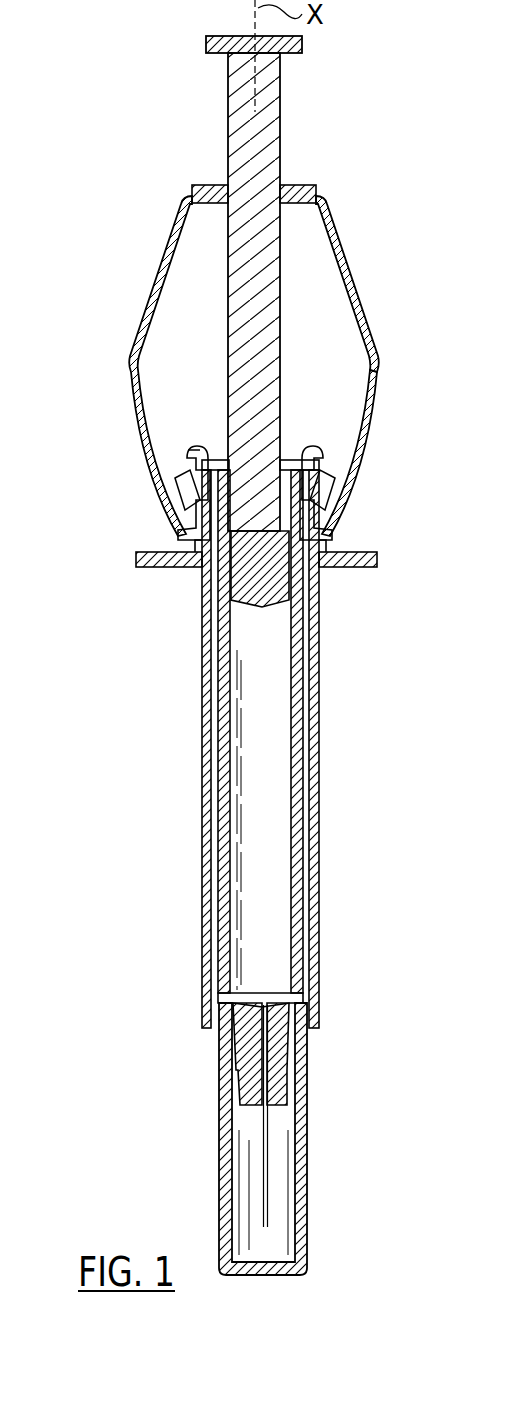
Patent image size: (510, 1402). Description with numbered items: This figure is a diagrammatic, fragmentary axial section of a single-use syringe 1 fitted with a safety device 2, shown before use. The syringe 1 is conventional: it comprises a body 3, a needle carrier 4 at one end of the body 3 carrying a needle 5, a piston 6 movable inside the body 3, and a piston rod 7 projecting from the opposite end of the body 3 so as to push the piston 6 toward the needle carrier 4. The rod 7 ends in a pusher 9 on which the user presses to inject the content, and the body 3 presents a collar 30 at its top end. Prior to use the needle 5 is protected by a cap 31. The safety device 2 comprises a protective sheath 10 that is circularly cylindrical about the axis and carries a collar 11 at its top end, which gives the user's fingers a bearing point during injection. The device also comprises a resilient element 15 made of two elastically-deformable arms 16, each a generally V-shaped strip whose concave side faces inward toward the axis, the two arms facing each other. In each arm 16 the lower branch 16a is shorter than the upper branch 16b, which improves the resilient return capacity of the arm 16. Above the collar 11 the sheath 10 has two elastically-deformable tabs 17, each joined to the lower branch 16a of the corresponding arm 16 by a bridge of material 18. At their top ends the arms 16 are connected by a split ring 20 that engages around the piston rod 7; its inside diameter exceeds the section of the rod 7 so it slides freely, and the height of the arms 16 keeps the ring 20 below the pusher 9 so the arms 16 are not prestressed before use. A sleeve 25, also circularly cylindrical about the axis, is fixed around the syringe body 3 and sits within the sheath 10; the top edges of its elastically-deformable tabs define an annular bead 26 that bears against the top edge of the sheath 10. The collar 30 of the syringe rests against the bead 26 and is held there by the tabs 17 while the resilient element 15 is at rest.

The single-use syringe 1 is at (304, 122).
The safety device 2 is at (332, 762).
The body 3 is at (230, 765).
The needle carrier 4 is at (285, 1040).
The needle 5 is at (268, 1172).
The piston 6 is at (290, 600).
The piston rod 7 is at (245, 155).
The pusher 9 is at (215, 46).
The protective sheath 10 is at (304, 744).
The collar 11 is at (360, 556).
The resilient element 15 is at (274, 366).
The elastically-deformable arms 16 is at (140, 320).
The lower branch 16a is at (355, 455).
The upper branch 16b is at (345, 250).
The elastically-deformable tabs 17 is at (190, 465).
The bridge of material 18 is at (180, 488).
The split ring 20 is at (305, 192).
The sleeve 25 is at (312, 695).
The annular bead 26 is at (168, 505).
The collar 30 is at (212, 455).
The cap 31 is at (305, 1238).